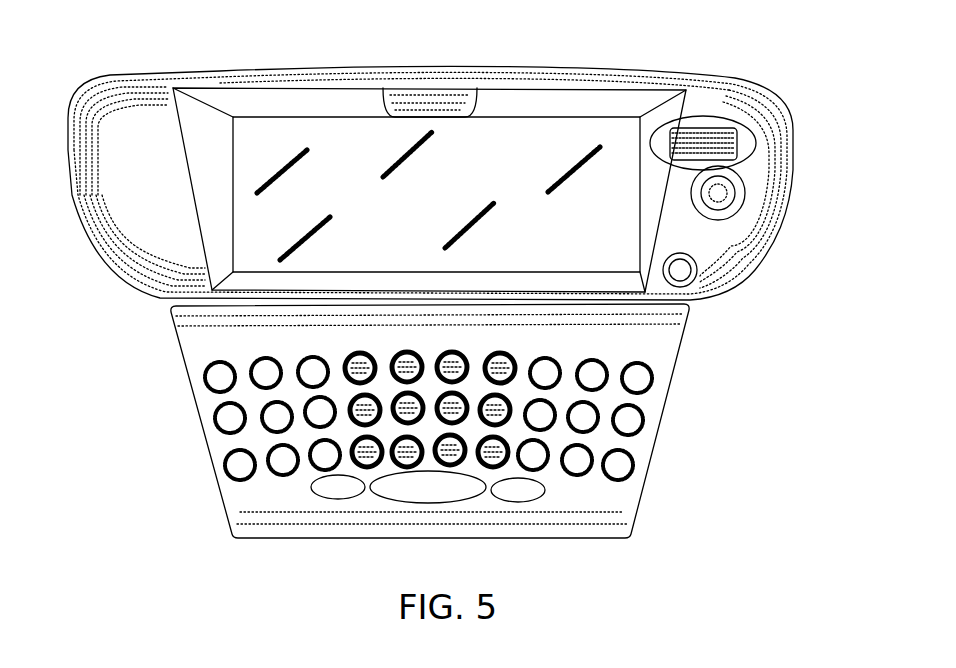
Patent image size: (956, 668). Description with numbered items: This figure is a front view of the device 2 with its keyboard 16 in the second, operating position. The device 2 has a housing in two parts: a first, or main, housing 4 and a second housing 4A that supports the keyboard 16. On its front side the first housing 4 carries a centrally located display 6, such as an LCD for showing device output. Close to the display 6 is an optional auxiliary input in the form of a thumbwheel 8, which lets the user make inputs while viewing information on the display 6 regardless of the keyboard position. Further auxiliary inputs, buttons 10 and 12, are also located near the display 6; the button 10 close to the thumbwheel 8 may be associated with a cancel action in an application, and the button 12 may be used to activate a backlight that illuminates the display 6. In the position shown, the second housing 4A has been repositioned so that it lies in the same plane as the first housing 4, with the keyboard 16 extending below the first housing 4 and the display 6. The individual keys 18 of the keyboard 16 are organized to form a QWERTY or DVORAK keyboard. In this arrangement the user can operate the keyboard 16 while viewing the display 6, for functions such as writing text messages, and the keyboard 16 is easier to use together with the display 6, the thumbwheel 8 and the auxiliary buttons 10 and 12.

The device 2 is at (44, 49).
The first housing 4 is at (731, 77).
The second housing 4A is at (676, 404).
The display 6 is at (522, 117).
The thumbwheel 8 is at (737, 145).
The button 10 is at (737, 192).
The button 12 is at (697, 263).
The keyboard 16 is at (187, 357).
The keys 18 is at (603, 363).